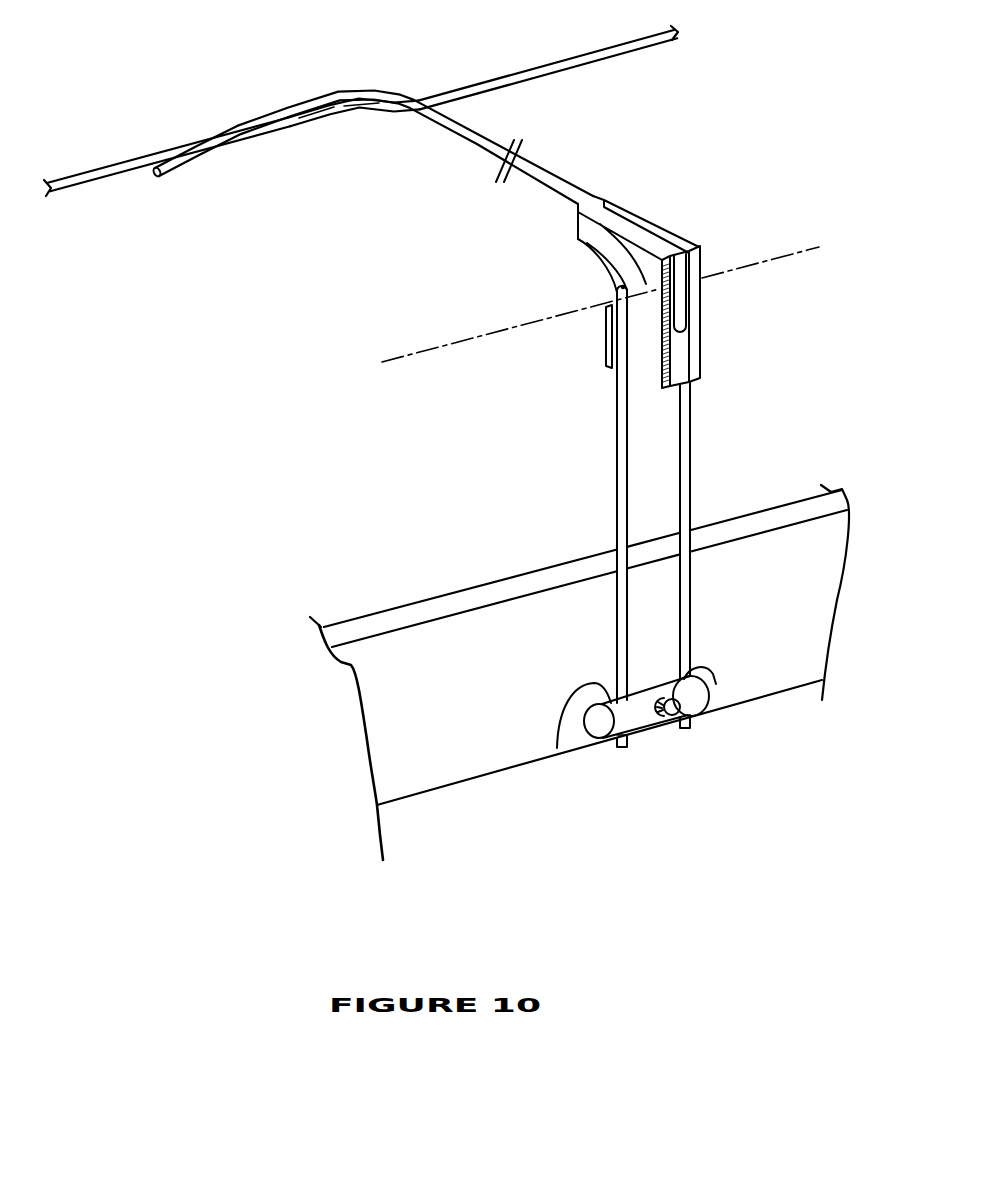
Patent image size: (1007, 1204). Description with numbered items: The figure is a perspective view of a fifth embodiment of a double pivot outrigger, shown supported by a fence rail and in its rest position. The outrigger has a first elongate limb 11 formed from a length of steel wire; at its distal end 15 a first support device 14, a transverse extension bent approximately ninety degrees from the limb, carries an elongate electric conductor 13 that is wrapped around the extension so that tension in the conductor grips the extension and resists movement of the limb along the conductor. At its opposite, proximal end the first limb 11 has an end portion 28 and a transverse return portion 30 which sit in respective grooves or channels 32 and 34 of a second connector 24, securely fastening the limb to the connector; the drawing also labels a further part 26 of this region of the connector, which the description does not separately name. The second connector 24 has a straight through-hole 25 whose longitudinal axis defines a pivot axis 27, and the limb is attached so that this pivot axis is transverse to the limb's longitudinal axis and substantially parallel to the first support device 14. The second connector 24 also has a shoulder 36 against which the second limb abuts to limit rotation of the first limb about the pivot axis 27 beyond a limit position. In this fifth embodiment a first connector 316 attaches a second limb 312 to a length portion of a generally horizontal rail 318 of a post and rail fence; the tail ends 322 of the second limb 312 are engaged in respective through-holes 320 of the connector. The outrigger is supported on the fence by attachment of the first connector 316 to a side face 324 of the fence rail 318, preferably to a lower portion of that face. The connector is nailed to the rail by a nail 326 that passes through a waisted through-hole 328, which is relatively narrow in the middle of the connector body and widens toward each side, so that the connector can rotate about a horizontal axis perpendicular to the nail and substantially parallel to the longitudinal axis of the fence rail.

The first elongate limb 11 is at (528, 160).
The elongate electric conductor 13 is at (583, 53).
The first support device 14 is at (213, 137).
The distal end 15 is at (397, 88).
The second connector 24 is at (600, 262).
The through-hole 25 is at (595, 245).
The flattened strap portion 26 is at (650, 278).
The pivot axis 27 is at (428, 346).
The end portion 28 is at (642, 232).
The transverse return portion 30 is at (686, 297).
The groove 32 is at (683, 243).
The channel 34 is at (684, 343).
The shoulder 36 is at (608, 352).
The second limb 312 is at (623, 497).
The first connector 316 is at (700, 703).
The fence rail 318 is at (428, 662).
The through-holes 320 is at (637, 718).
The tail ends 322 is at (716, 670).
The side face 324 is at (800, 592).
The nail 326 is at (688, 712).
The waisted through-hole 328 is at (662, 717).